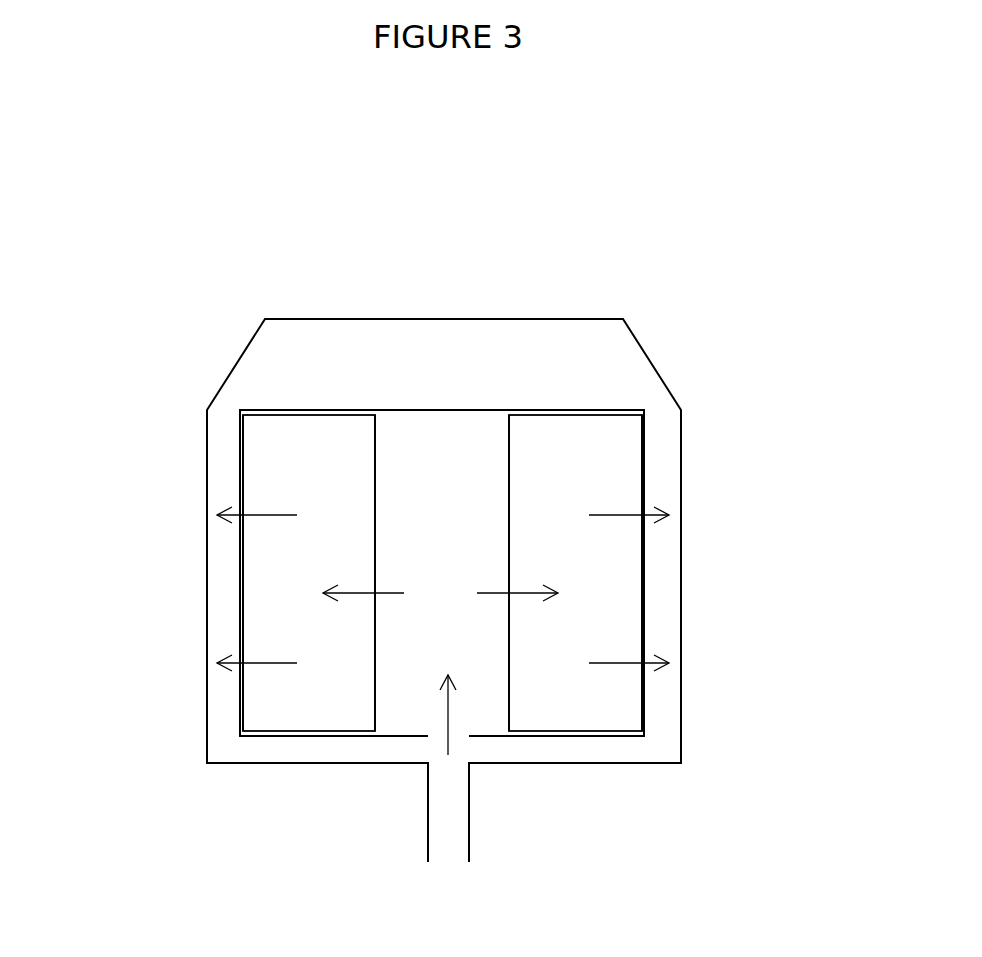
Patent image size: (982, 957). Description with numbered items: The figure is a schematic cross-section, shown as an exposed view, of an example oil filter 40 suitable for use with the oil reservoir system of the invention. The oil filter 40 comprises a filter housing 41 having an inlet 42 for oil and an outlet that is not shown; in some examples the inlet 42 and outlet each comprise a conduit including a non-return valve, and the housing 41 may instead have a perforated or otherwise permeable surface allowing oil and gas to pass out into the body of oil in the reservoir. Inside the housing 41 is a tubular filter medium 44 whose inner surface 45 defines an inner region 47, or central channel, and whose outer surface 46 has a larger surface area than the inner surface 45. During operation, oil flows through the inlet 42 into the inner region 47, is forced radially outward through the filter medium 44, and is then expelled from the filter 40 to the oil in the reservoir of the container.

The oil filter 40 is at (618, 227).
The filter housing 41 is at (664, 358).
The inlet 42 is at (453, 802).
The filter medium 44 is at (550, 449).
The inner surface 45 is at (389, 501).
The outer surface 46 is at (226, 570).
The inner region 47 is at (399, 649).